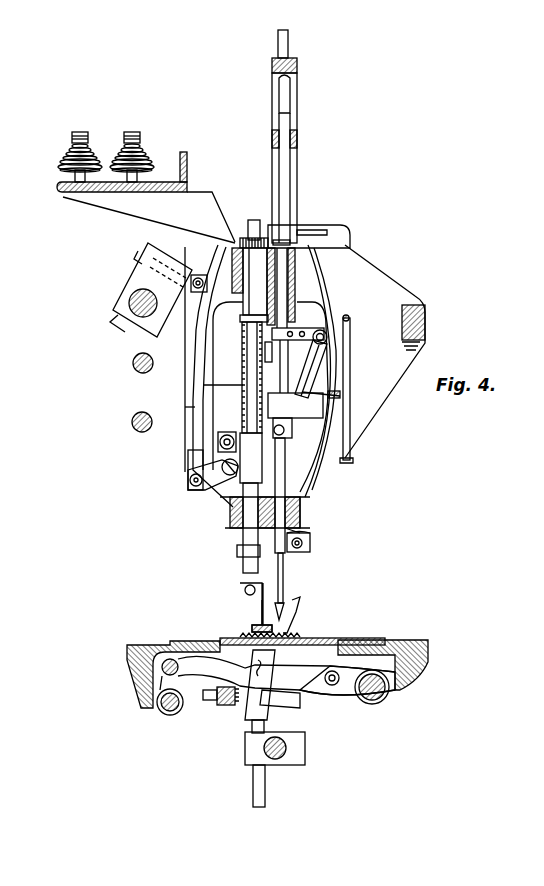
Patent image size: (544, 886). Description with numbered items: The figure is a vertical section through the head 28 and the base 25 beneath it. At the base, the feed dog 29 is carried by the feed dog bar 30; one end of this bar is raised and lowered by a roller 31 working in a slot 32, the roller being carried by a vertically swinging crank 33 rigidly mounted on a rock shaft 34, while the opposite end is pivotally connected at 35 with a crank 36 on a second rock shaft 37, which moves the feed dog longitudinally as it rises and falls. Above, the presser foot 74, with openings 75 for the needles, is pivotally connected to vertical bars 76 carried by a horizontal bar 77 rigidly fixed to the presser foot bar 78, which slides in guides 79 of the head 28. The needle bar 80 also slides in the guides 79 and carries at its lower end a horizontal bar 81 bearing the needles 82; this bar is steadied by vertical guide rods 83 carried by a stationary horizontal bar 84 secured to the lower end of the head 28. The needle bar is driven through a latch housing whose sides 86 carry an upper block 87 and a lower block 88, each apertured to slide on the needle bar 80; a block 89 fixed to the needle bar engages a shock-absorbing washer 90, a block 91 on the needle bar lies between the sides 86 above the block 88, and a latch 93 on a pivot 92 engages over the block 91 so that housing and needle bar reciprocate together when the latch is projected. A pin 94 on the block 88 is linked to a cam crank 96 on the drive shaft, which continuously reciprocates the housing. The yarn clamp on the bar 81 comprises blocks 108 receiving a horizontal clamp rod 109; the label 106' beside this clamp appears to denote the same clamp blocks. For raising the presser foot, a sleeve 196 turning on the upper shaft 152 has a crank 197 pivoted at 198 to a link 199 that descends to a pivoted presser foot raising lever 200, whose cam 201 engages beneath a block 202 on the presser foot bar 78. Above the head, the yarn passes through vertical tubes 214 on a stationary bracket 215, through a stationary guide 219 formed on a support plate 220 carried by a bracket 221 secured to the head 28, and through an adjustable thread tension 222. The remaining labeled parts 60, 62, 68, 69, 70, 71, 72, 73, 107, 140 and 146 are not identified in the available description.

The vertical tubes 214 is at (288, 49).
The stationary bracket 215 is at (297, 122).
The guides 79 is at (290, 246).
The vertical guide rods 83 is at (250, 370).
The head 28 is at (213, 365).
The block 88 is at (293, 430).
The shock-absorbing washer 90 is at (296, 312).
The block 89 is at (312, 322).
The block 87 is at (324, 331).
The sides 86 is at (325, 358).
The latch 93 is at (320, 365).
The pivot 92 is at (350, 334).
The blocks 108 is at (341, 396).
The foot 107 is at (353, 461).
The block 91 is at (293, 413).
The pin 94 is at (292, 432).
The needle bar 80 is at (285, 487).
The stationary horizontal bar 84 is at (300, 506).
The needles 82 is at (258, 520).
The horizontal bar 81 is at (287, 523).
The spring 106' is at (330, 529).
The clamp rod 109 is at (310, 545).
The needle bar end 62 is at (284, 592).
The openings 75 is at (270, 576).
The presser foot 69 is at (287, 608).
The feed member 72 is at (290, 622).
The presser foot bar 78 is at (248, 540).
The block 202 is at (220, 440).
The cam 201 is at (222, 466).
The presser foot raising lever 200 is at (208, 480).
The horizontal bar 77 is at (240, 550).
The vertical bars 76 is at (244, 600).
The presser foot 74 is at (255, 615).
The feed dog 29 is at (300, 640).
The base 25 is at (147, 645).
The roller 31 is at (346, 668).
The feed dog bar 30 is at (262, 662).
The pivotal connection 35 is at (161, 669).
The crank 36 is at (157, 700).
The rock shaft 37 is at (165, 711).
The slot 32 is at (330, 686).
The crank 33 is at (350, 700).
The rock shaft 34 is at (389, 690).
The block 68 is at (227, 706).
The bar 73 is at (252, 733).
The bearing block 71 is at (306, 757).
The shaft 60 is at (278, 760).
The rod 70 is at (256, 786).
The support plate 220 is at (112, 193).
The stationary guide 219 is at (187, 172).
The adjustable thread tension 222 is at (142, 146).
The stationary bracket 221 is at (155, 207).
The pivotal connection 198 is at (199, 279).
The crank 197 is at (140, 278).
The sleeve 196 is at (129, 302).
The upper shaft 152 is at (125, 326).
The pin 146 is at (122, 365).
The cam crank 96 is at (203, 385).
The link 199 is at (185, 407).
The pin 140 is at (121, 425).